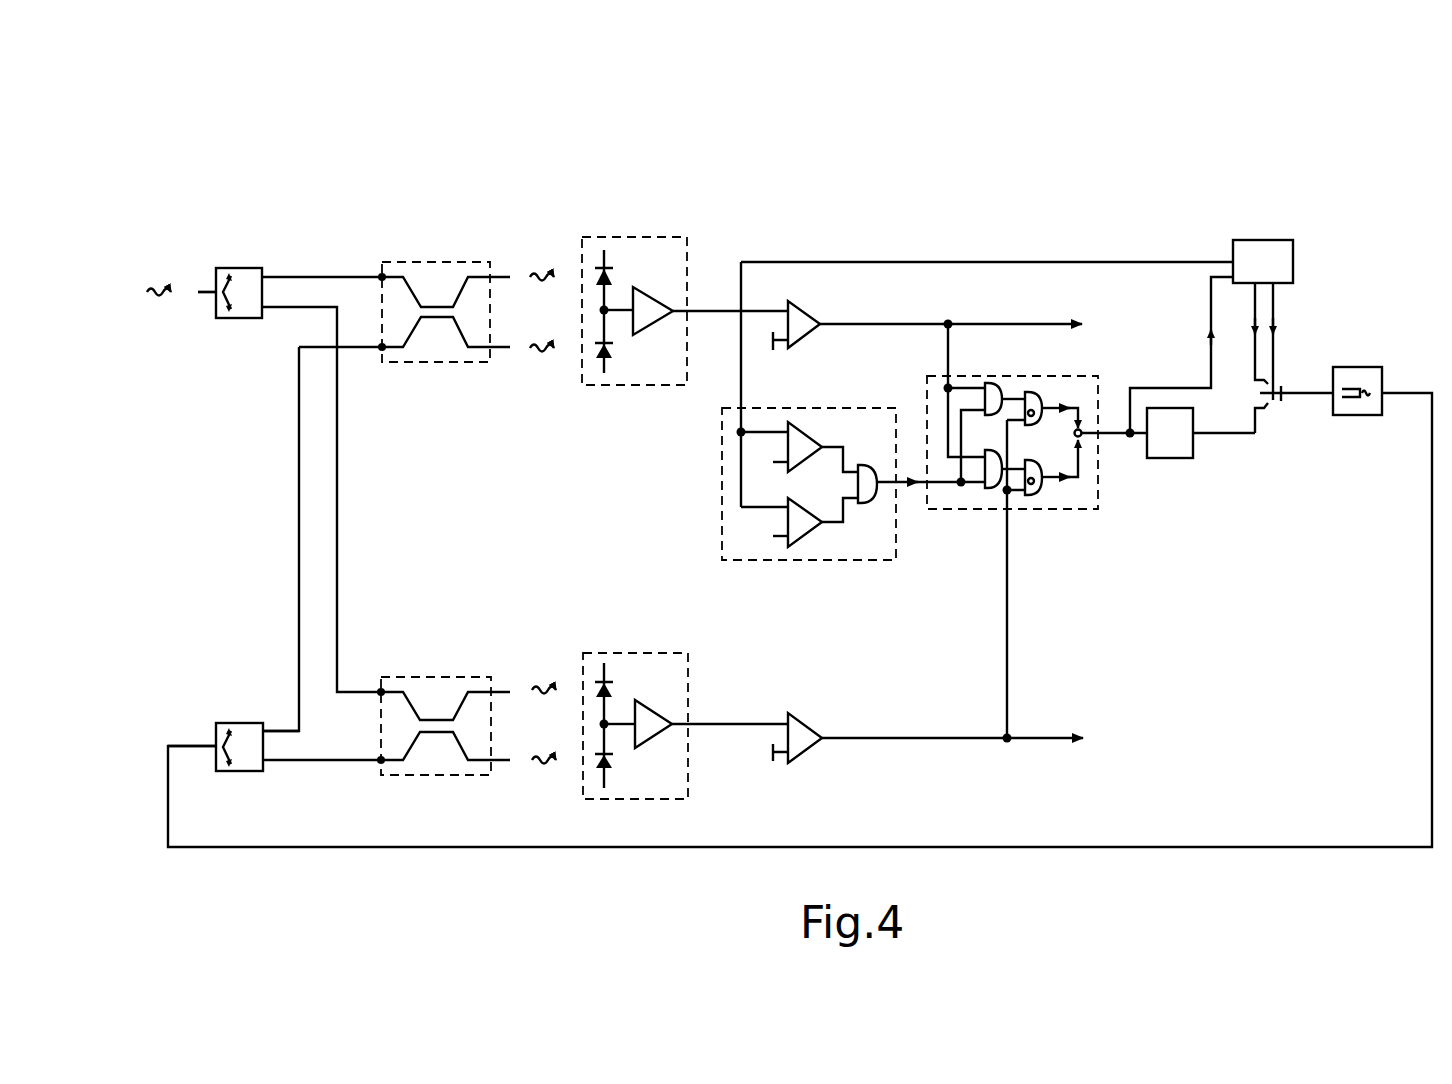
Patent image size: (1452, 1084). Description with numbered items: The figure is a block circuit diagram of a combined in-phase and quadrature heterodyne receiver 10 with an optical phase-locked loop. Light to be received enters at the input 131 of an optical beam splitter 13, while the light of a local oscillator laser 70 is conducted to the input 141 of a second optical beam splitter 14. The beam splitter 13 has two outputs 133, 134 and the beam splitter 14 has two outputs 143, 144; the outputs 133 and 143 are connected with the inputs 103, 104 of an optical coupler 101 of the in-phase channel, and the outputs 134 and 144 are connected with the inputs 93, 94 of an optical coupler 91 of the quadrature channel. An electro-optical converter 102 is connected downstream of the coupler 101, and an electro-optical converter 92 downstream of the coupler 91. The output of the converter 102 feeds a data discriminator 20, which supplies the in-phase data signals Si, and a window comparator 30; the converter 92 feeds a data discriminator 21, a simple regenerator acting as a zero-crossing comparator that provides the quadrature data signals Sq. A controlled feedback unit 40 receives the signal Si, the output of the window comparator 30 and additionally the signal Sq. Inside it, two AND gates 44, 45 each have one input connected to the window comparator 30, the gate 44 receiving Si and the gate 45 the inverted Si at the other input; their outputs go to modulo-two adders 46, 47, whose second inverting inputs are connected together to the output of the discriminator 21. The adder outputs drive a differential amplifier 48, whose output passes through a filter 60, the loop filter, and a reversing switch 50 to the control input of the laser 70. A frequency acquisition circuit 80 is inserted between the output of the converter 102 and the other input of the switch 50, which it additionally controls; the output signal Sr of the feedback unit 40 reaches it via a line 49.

The in-phase heterodyne receiver 10 is at (1052, 182).
The optical beam splitter 13 is at (243, 272).
The input 131 is at (208, 290).
The output 133 is at (273, 275).
The output 134 is at (273, 310).
The optical coupler 101 is at (438, 272).
The input 103 is at (379, 275).
The input 104 is at (379, 349).
The electro-optical converter 102 is at (632, 242).
The data discriminator 20 is at (810, 320).
The window comparator 30 is at (731, 524).
The controlled feedback unit 40 is at (1071, 500).
The AND gate 44 is at (999, 378).
The AND gate 45 is at (988, 493).
The modulo-2-adder 46 is at (1032, 390).
The modulo-2-adder 47 is at (1030, 496).
The differential amplifier 48 is at (1085, 438).
The line 49 is at (1208, 303).
The reversing switch 50 is at (1281, 405).
The filter 60 is at (1175, 448).
The local oscillator laser 70 is at (1353, 373).
The frequency acquisition circuit 80 is at (1252, 248).
The optical beam splitter 14 is at (245, 768).
The input 141 is at (200, 743).
The output 143 is at (277, 728).
The output 144 is at (278, 766).
The optical coupler 91 is at (423, 685).
The input 93 is at (378, 690).
The input 94 is at (378, 758).
The electro-optical converter 92 is at (632, 662).
The data discriminator 21 is at (807, 735).